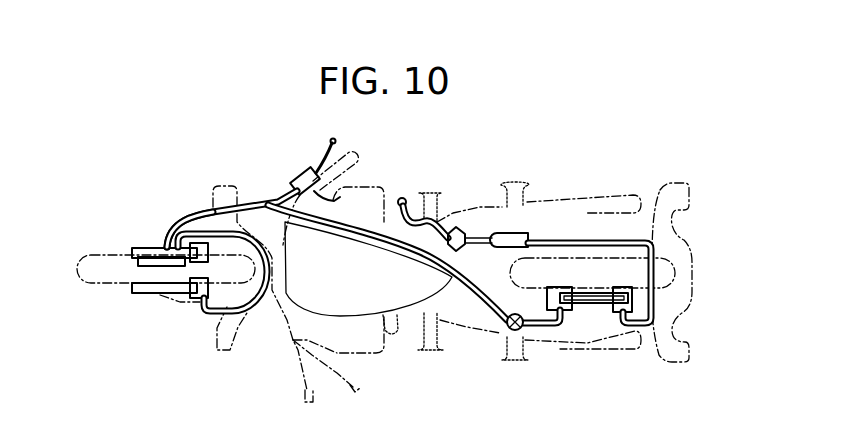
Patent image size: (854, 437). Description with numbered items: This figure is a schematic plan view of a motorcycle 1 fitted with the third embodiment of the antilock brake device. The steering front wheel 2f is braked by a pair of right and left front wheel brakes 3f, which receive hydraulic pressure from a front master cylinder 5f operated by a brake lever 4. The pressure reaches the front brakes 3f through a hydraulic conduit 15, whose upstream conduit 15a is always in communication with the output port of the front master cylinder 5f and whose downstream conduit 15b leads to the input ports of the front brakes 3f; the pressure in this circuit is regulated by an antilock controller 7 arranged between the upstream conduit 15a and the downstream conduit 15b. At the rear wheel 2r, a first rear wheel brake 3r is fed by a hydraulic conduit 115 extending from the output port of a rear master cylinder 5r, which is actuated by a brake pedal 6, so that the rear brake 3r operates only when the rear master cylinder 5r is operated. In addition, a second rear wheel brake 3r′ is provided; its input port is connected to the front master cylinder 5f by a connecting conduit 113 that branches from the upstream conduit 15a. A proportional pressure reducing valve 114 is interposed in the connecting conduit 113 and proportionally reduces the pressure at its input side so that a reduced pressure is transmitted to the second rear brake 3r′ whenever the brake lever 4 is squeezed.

The motorcycle 1 is at (483, 203).
The front wheel 2f is at (83, 284).
The rear wheel 2r is at (677, 270).
The front wheel brakes 3f is at (150, 248).
The rear wheel brake 3r is at (616, 313).
The second rear wheel brake 3r′ is at (572, 311).
The brake lever 4 is at (322, 154).
The front master cylinder 5f is at (299, 180).
The rear master cylinder 5r is at (518, 236).
The brake pedal 6 is at (402, 197).
The antilock controller 7 is at (140, 257).
The hydraulic conduit 15 is at (247, 204).
The upstream conduit 15a is at (205, 211).
The downstream conduit 15b is at (270, 268).
The connecting conduit 113 is at (407, 246).
The proportional pressure reducing valve 114 is at (510, 329).
The hydraulic conduit 115 is at (564, 241).